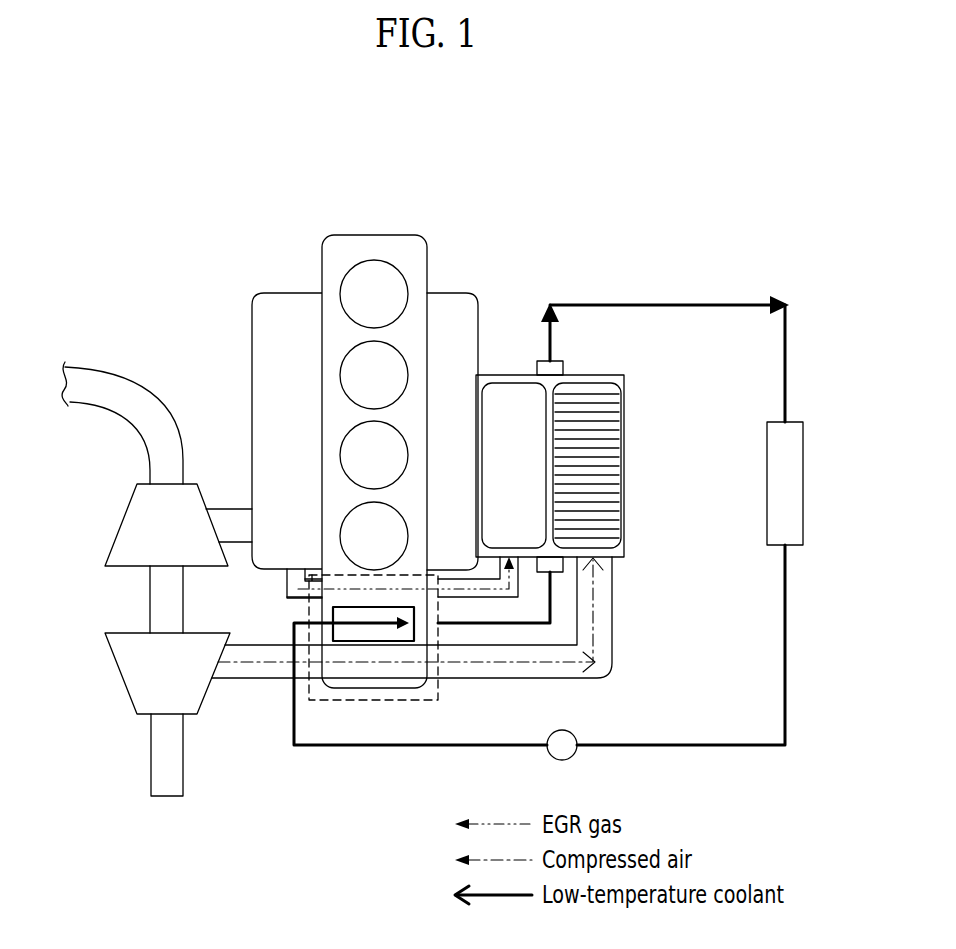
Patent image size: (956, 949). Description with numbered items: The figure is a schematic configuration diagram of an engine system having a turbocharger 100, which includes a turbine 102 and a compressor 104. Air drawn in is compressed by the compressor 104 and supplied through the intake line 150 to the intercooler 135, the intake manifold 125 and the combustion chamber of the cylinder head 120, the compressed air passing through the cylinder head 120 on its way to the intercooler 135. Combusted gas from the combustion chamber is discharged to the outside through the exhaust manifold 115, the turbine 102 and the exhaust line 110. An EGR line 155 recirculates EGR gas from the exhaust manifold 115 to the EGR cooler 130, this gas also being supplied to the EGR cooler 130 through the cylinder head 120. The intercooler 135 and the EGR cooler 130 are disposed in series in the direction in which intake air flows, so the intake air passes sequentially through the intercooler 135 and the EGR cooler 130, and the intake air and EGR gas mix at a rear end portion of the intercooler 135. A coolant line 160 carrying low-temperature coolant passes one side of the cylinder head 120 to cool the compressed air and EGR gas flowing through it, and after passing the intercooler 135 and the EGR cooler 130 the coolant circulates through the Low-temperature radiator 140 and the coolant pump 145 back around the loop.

The turbocharger 100 is at (115, 688).
The turbine 102 is at (127, 528).
The compressor 104 is at (193, 686).
The exhaust line 110 is at (116, 383).
The exhaust manifold 115 is at (272, 315).
The cylinder head 120 is at (372, 232).
The intake manifold 125 is at (438, 300).
The EGR cooler 130 is at (513, 402).
The intercooler 135 is at (603, 432).
The Low-temperature radiator 140 is at (773, 475).
The coolant pump 145 is at (567, 733).
The intake line 150 is at (484, 670).
The EGR line 155 is at (292, 584).
The coolant line 160 is at (680, 743).